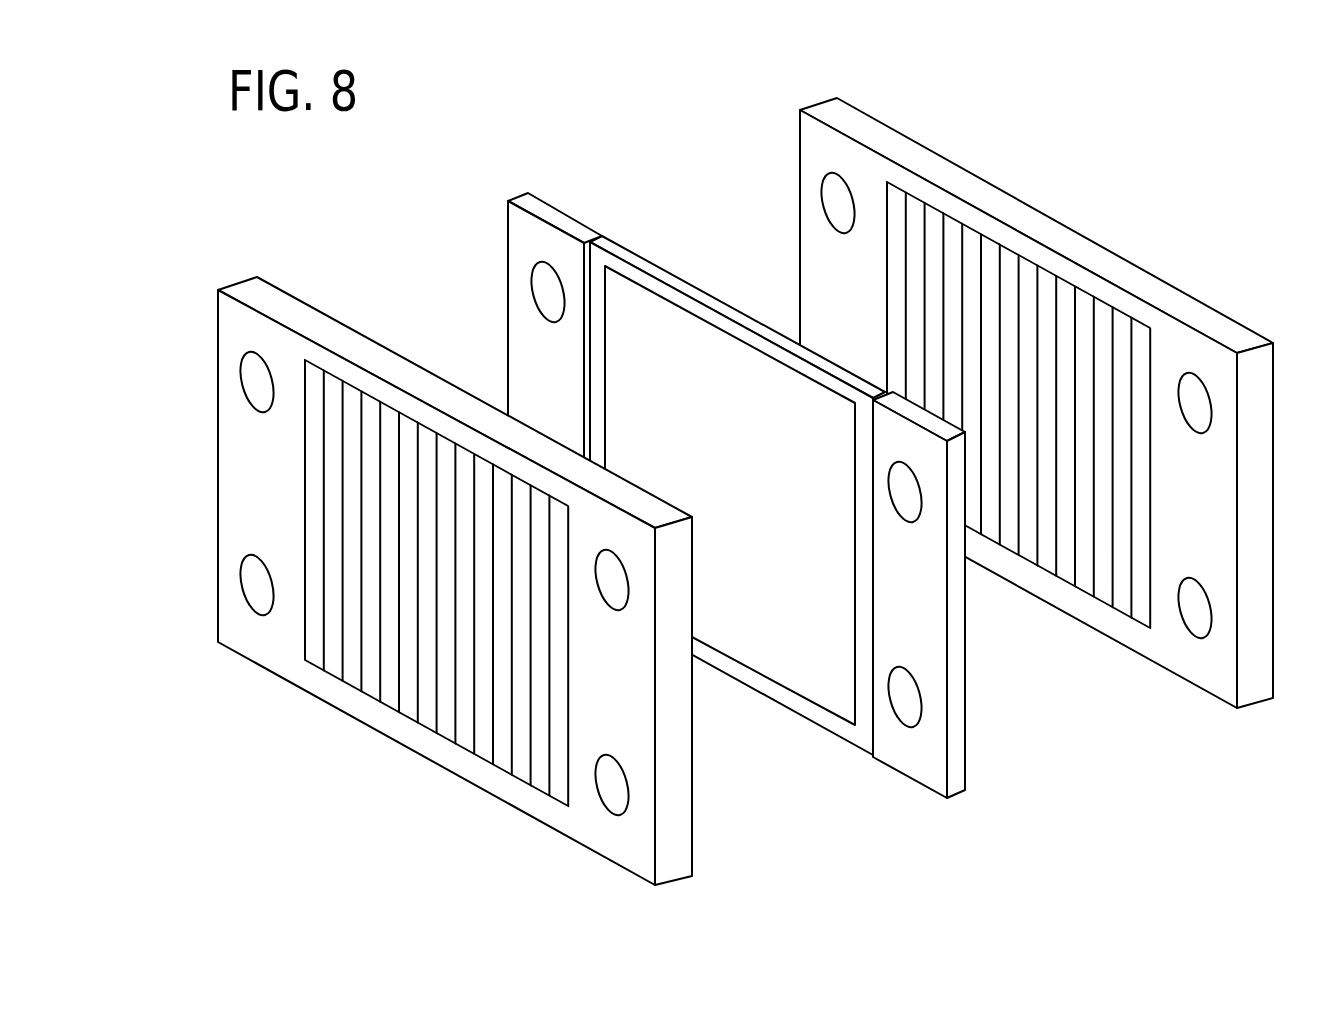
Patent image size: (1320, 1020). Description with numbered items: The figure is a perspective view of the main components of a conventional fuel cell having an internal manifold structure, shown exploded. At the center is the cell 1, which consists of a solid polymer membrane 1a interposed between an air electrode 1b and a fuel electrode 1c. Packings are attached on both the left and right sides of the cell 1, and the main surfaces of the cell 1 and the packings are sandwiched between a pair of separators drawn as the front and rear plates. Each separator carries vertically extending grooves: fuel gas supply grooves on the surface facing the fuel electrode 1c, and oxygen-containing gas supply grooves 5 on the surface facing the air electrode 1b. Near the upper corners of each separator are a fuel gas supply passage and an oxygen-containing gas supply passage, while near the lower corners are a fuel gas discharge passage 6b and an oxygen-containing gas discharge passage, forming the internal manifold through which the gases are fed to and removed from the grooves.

The cell 1 is at (660, 468).
The solid polymer membrane 1a is at (846, 733).
The air electrode 1b is at (747, 623).
The fuel electrode 1c is at (787, 647).
The oxygen-containing gas supply groove 5 is at (422, 697).
The fuel gas discharge passage 6b is at (265, 592).